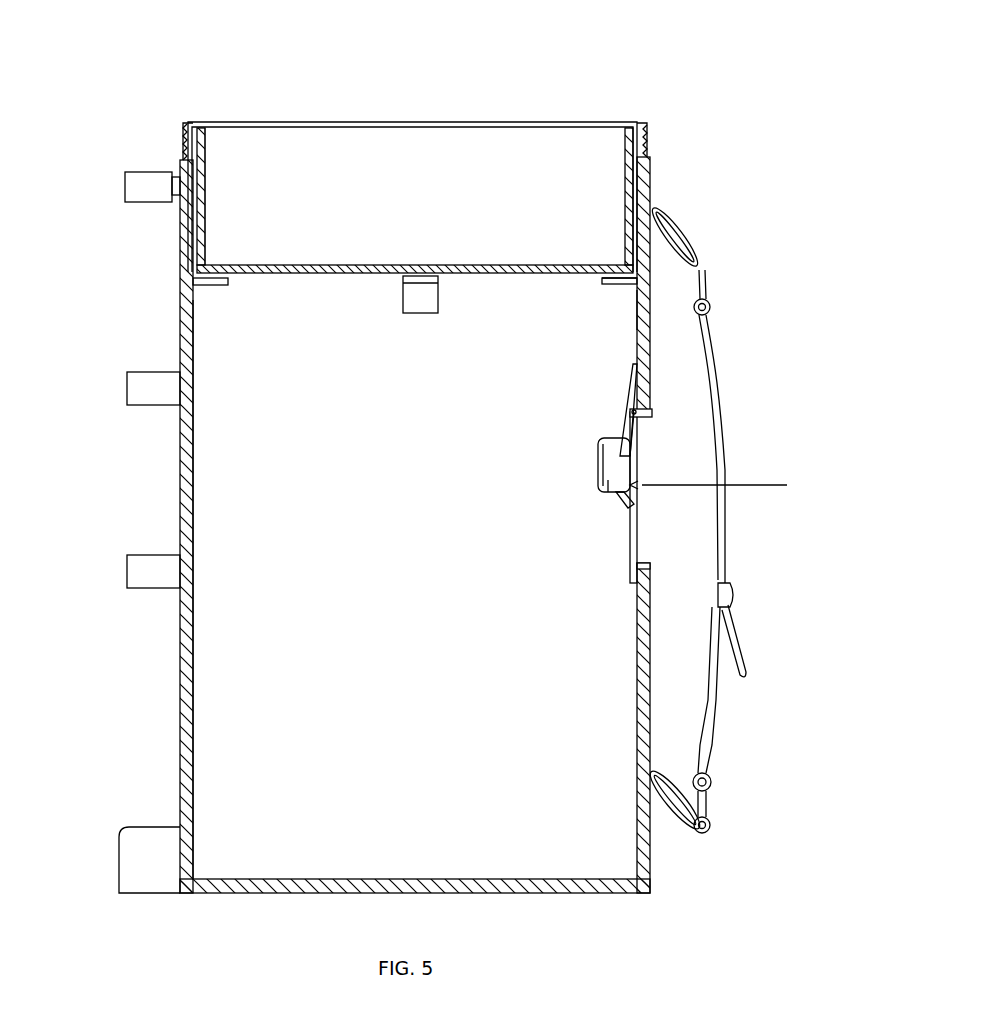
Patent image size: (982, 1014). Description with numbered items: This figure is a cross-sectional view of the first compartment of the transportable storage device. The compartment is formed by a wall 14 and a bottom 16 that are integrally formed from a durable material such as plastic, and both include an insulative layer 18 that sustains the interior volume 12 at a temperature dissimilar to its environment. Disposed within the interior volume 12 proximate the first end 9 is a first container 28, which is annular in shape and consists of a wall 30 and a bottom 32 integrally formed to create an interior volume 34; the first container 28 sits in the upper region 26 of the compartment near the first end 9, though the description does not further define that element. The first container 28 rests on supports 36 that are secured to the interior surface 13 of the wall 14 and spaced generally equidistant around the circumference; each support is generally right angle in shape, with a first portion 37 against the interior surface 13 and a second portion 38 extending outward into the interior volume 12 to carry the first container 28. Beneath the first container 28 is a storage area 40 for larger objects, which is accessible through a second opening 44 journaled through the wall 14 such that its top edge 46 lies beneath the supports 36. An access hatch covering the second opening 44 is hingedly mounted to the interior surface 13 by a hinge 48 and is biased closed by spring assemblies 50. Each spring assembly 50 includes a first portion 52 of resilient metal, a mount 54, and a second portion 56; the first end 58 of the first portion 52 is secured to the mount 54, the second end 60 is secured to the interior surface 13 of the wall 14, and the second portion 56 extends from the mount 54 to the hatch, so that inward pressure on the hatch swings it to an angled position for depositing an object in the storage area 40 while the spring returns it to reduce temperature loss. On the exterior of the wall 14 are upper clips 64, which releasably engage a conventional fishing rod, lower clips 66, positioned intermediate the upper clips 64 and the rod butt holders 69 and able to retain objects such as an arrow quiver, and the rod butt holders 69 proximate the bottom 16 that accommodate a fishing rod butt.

The first end 9 is at (122, 240).
The interior volume 12 is at (556, 326).
The interior surface 13 is at (196, 474).
The wall 14 is at (183, 520).
The bottom 16 is at (548, 893).
The insulative layer 18 is at (650, 850).
The lid 26 is at (560, 99).
The first container 28 is at (208, 190).
The wall 30 is at (645, 126).
The bottom 32 is at (560, 264).
The interior volume 34 is at (492, 156).
The supports 36 is at (197, 290).
The first portion 37 is at (636, 281).
The second portion 38 is at (622, 312).
The storage area 40 is at (604, 570).
The second opening 44 is at (679, 553).
The top edge 46 is at (643, 418).
The hinge 48 is at (637, 412).
The spring assemblies 50 is at (589, 470).
The first portion 52 is at (631, 407).
The mount 54 is at (612, 480).
The second portion 56 is at (627, 507).
The first end 58 is at (610, 438).
The second end 60 is at (631, 380).
The upper clips 64 is at (142, 183).
The lower clips 66 is at (147, 386).
The rod butt holders 69 is at (154, 870).